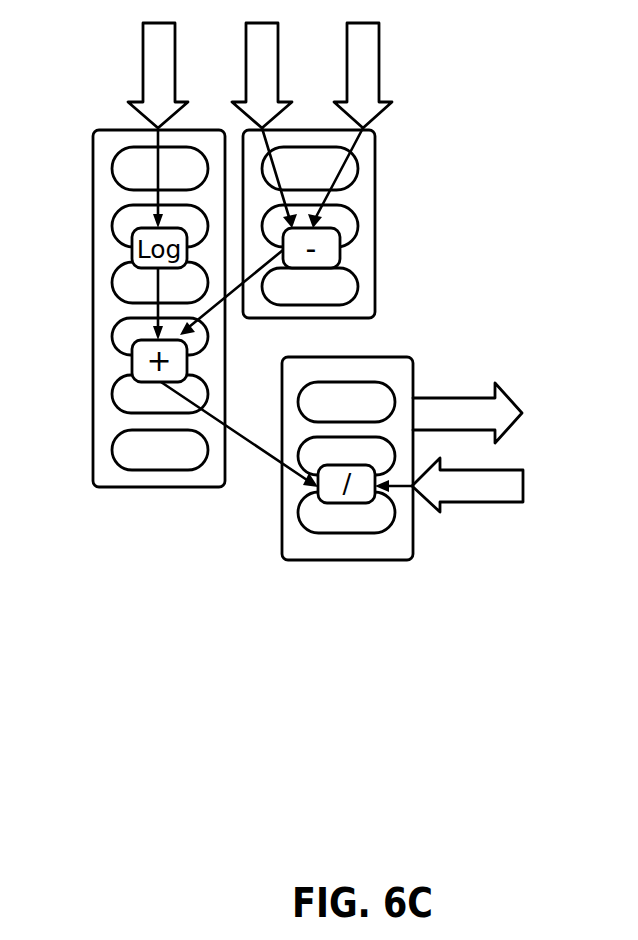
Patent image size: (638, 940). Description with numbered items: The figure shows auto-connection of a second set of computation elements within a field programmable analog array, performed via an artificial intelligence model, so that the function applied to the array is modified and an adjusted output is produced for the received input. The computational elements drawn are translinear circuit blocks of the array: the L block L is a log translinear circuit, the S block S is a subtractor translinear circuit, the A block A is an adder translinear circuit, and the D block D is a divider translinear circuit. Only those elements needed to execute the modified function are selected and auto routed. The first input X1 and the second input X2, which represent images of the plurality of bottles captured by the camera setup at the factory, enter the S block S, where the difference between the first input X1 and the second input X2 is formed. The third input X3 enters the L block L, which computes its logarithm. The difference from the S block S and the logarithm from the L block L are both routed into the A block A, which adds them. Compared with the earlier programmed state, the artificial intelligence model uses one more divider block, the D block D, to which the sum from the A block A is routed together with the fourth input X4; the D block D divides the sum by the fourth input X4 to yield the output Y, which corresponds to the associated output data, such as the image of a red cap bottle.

The first input X1 is at (262, 75).
The second input X2 is at (363, 75).
The third input X3 is at (158, 75).
The fourth input X4 is at (449, 485).
The output Y is at (467, 413).
The L block L is at (159, 308).
The S block S is at (309, 224).
The A block A is at (160, 394).
The D block D is at (347, 458).